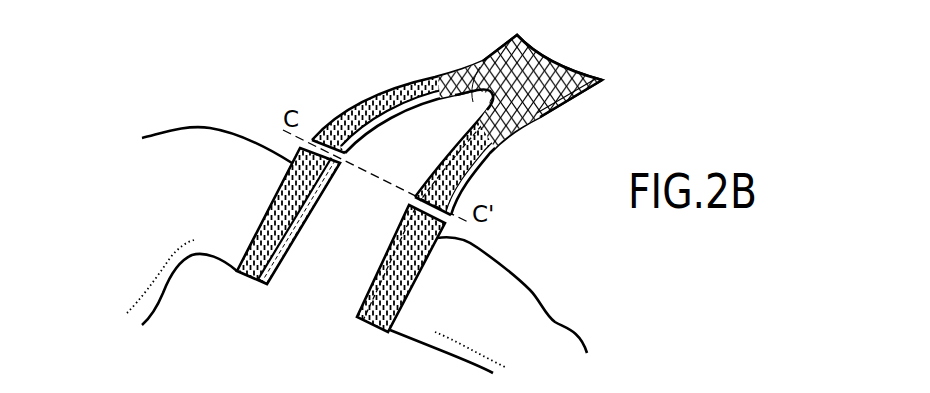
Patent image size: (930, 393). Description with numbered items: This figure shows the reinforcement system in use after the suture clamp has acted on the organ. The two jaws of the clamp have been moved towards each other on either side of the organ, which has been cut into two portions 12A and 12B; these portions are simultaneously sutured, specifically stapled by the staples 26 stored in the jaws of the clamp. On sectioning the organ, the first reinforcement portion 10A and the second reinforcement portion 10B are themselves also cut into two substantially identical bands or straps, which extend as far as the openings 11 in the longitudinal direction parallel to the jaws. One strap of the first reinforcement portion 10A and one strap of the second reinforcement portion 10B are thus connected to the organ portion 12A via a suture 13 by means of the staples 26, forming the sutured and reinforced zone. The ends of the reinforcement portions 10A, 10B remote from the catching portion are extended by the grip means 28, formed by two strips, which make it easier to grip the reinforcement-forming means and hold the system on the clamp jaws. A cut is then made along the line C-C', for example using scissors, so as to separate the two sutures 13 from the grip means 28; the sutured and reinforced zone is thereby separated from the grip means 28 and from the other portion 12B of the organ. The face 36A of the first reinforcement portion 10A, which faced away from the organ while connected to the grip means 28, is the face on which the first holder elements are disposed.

The first reinforcement portion 10A is at (270, 203).
The second reinforcement portion 10B is at (313, 210).
The openings 11 is at (478, 65).
The portion of the organ 12A is at (224, 136).
The other portion of the organ 12B is at (548, 312).
The suture 13 is at (380, 268).
The staples 26 is at (283, 263).
The grip means 28 is at (553, 62).
The face of the first reinforcement portion 36A is at (253, 237).